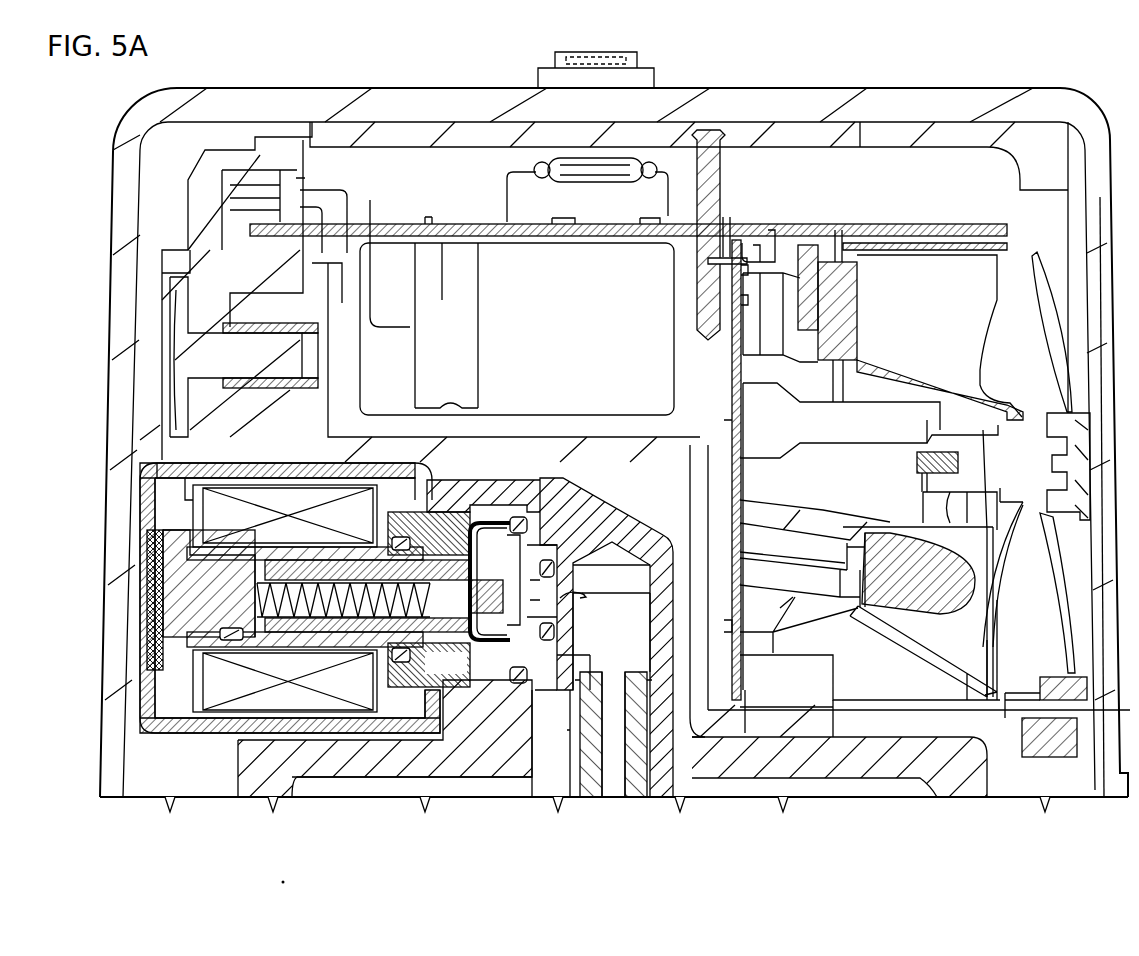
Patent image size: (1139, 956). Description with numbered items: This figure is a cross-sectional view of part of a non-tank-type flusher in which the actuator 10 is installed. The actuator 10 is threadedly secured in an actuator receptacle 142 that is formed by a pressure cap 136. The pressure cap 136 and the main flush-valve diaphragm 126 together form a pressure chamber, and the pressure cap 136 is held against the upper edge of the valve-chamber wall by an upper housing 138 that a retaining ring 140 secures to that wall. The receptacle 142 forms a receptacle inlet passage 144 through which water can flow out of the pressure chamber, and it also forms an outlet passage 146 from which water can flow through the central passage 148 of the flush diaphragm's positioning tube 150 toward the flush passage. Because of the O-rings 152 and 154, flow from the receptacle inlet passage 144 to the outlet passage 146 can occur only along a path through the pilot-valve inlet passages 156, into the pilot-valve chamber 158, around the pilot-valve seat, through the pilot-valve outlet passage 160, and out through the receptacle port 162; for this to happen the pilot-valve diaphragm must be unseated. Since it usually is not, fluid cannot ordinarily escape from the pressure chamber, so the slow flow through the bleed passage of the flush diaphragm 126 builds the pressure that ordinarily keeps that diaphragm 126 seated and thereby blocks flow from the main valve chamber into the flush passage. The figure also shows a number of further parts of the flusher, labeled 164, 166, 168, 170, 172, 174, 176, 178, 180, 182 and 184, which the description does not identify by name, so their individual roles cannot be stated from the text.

The actuator 10 is at (182, 752).
The flush-valve diaphragm 126 is at (345, 599).
The pressure cap 136 is at (985, 770).
The upper housing 138 is at (957, 88).
The retaining ring 140 is at (420, 292).
The actuator receptacle 142 is at (583, 488).
The receptacle inlet passage 144 is at (547, 790).
The outlet passage 146 is at (648, 622).
The central passage 148 is at (613, 725).
The positioning tube 150 is at (592, 680).
The O-ring 152 is at (597, 545).
The O-ring 154 is at (515, 520).
The pilot-valve inlet passages 156 is at (520, 780).
The pilot-valve chamber 158 is at (492, 512).
The pilot-valve outlet passage 160 is at (598, 548).
The receptacle port 162 is at (603, 610).
The printed circuit board 164 is at (628, 239).
The capacitor 166 is at (484, 242).
The motor body 168 is at (517, 329).
The shaft 170 is at (733, 235).
The mounting plate 172 is at (736, 470).
The stator 174 is at (883, 471).
The motor lower housing 176 is at (870, 576).
The fan 178 is at (1036, 504).
The coil 180 is at (304, 595).
The plunger 182 is at (201, 600).
The spring 184 is at (380, 596).